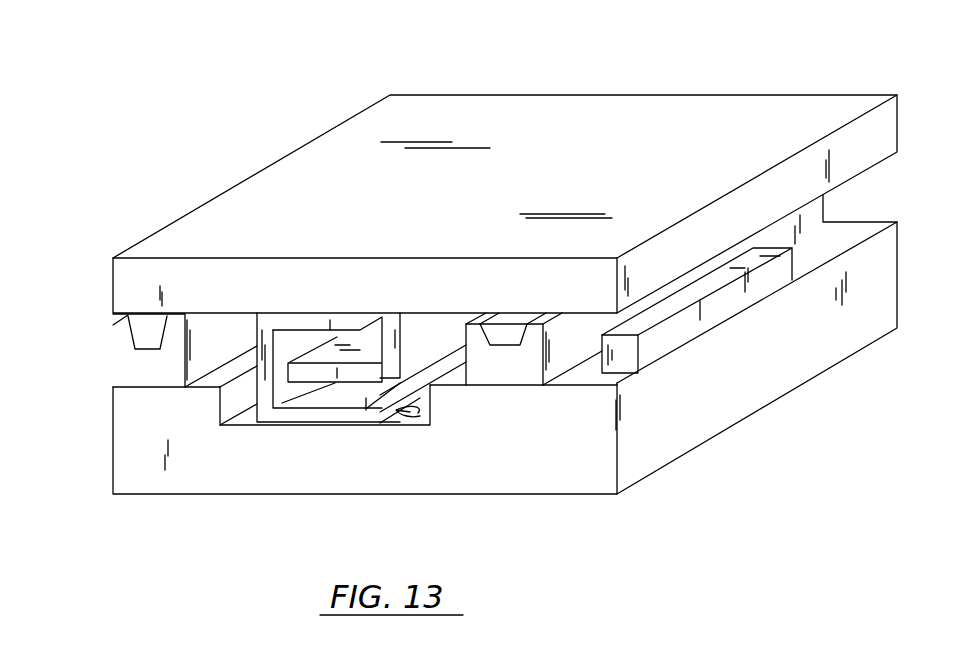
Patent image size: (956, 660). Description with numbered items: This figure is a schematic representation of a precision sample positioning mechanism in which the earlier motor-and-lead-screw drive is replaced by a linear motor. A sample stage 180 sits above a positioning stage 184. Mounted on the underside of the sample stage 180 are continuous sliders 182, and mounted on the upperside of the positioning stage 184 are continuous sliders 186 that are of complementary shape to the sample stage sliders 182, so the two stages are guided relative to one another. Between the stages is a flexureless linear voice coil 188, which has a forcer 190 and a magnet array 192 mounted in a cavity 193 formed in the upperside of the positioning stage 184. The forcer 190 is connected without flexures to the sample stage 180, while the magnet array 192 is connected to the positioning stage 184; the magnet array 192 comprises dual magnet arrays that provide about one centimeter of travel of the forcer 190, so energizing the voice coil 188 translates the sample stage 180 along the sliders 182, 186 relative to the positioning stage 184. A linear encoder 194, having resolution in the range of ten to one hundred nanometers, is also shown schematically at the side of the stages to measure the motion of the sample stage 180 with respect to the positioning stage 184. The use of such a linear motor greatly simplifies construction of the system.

The sample stage 180 is at (427, 142).
The continuous sliders 182 is at (142, 333).
The positioning stage 184 is at (163, 473).
The continuous sliders 186 is at (132, 372).
The flexureless linear voice coil 188 is at (257, 334).
The forcer 190 is at (363, 372).
The magnet array 192 is at (290, 413).
The cavity 193 is at (418, 413).
The linear encoder 194 is at (620, 358).